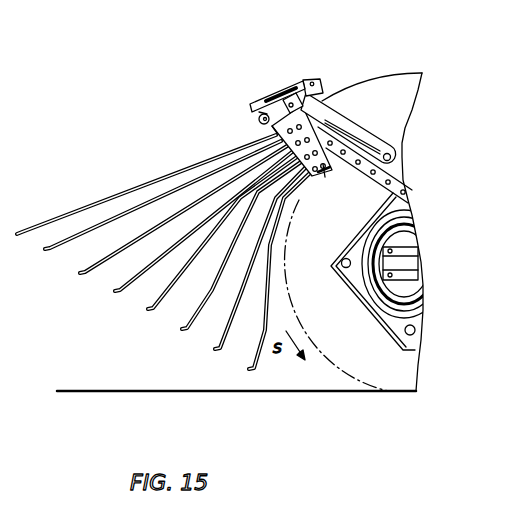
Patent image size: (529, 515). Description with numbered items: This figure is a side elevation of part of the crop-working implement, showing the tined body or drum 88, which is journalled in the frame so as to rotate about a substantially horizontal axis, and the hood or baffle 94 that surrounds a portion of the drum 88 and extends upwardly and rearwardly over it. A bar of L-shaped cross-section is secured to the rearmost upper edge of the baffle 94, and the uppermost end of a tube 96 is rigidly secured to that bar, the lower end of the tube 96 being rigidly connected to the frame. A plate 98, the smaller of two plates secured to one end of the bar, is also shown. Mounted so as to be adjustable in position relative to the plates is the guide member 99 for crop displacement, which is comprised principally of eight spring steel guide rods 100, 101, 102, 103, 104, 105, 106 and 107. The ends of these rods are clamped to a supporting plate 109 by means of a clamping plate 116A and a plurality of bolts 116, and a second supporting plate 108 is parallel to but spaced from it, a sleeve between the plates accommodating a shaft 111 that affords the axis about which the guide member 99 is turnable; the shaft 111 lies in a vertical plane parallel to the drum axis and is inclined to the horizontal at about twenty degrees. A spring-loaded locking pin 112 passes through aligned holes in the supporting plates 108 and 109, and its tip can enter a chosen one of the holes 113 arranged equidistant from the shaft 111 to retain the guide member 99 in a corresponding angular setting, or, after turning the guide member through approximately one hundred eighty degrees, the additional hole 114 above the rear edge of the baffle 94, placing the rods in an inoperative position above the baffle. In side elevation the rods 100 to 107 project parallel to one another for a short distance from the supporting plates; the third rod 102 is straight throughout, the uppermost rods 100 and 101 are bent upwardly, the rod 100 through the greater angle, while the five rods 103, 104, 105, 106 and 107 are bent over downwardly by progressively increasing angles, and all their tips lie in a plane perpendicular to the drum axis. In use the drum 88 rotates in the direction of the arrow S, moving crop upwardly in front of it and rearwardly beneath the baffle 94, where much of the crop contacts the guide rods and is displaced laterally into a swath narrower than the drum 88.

The tined body or drum 88 is at (315, 337).
The hood or baffle 94 is at (404, 66).
The tube 96 is at (369, 130).
The plate 98 is at (306, 81).
The guide member 99 is at (164, 263).
The guide rod 100 is at (37, 227).
The guide rod 101 is at (52, 250).
The guide rod 102 is at (87, 274).
The guide rod 103 is at (121, 292).
The guide rod 104 is at (154, 310).
The guide rod 105 is at (188, 330).
The guide rod 106 is at (221, 350).
The guide rod 107 is at (252, 370).
The second supporting plate 108 is at (258, 118).
The supporting plate 109 is at (258, 115).
The shaft 111 is at (287, 89).
The spring-loaded locking pin 112 is at (271, 131).
The holes 113 is at (253, 102).
The additional hole 114 is at (322, 92).
The bolts 116 is at (321, 175).
The clamping plate 116A is at (320, 189).